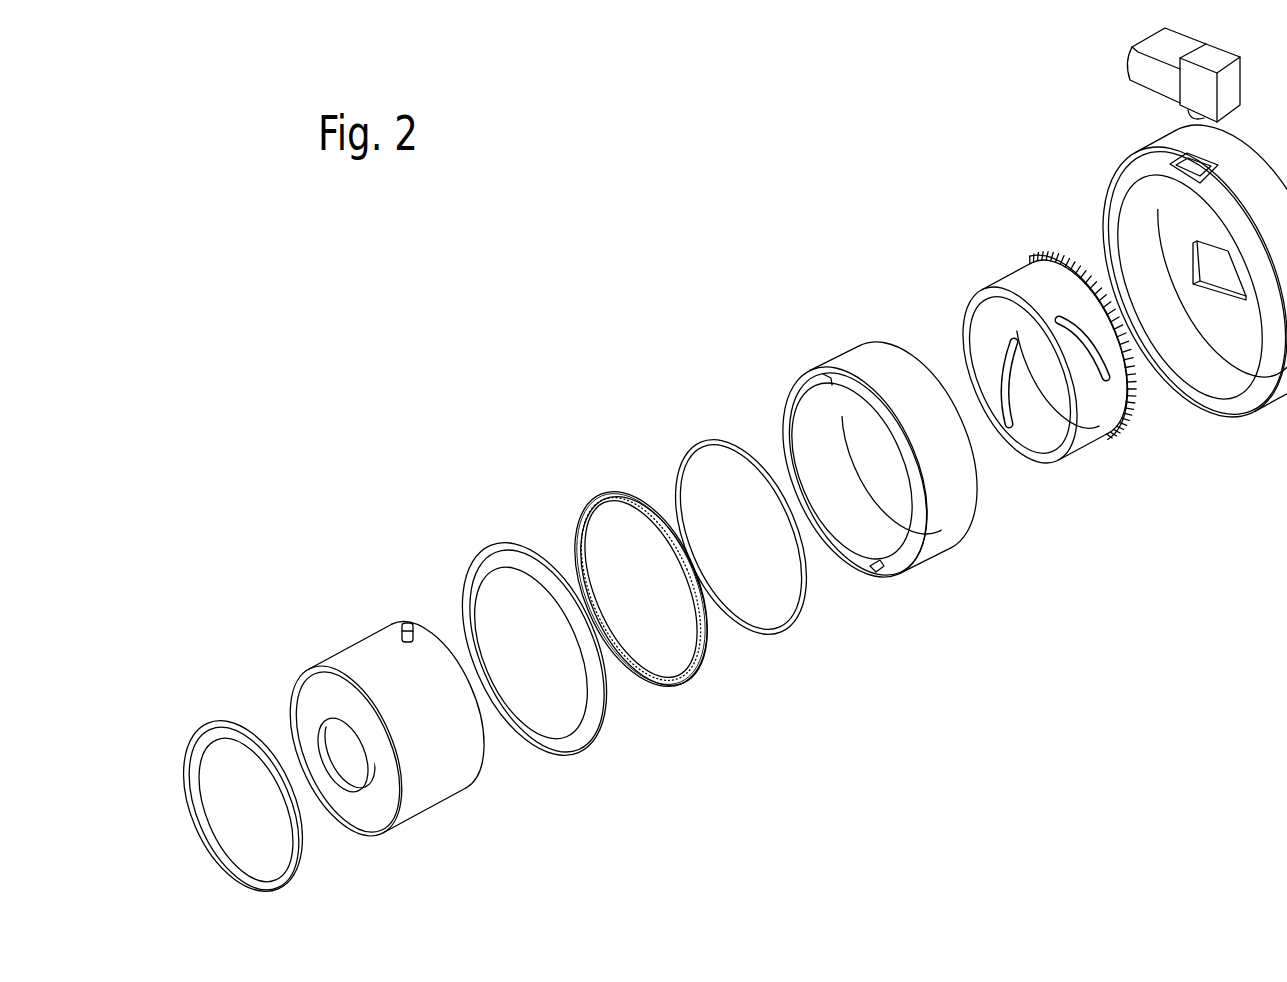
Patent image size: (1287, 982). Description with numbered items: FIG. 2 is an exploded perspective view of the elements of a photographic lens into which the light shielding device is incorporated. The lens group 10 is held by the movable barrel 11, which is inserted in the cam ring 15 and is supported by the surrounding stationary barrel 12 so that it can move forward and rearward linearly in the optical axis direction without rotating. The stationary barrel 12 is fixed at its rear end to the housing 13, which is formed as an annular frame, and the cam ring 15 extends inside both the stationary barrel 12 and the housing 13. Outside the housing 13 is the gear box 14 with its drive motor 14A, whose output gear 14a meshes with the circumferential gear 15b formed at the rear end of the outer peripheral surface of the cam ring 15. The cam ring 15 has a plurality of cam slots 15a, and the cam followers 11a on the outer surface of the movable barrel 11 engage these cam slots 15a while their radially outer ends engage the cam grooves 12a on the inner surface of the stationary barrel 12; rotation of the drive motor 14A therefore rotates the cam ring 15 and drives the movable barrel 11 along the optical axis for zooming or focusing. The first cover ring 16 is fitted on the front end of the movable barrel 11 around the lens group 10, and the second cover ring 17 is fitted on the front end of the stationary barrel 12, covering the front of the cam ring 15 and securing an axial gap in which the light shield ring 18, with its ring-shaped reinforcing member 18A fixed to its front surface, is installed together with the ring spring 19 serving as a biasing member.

The lens group 10 is at (323, 728).
The movable barrel 11 is at (380, 712).
The cam followers 11a is at (406, 623).
The stationary barrel 12 is at (870, 477).
The cam grooves 12a is at (884, 568).
The housing 13 is at (1268, 380).
The gear box 14 is at (1197, 91).
The drive motor 14A is at (1160, 84).
The output gear 14a is at (1205, 118).
The cam ring 15 is at (1064, 375).
The cam slots 15a is at (1024, 412).
The circumferential gear 15b is at (1132, 402).
The first cover ring 16 is at (297, 858).
The second cover ring 17 is at (592, 740).
The light shield ring 18 is at (642, 595).
The reinforcing member 18A is at (615, 497).
The ring spring 19 is at (793, 613).